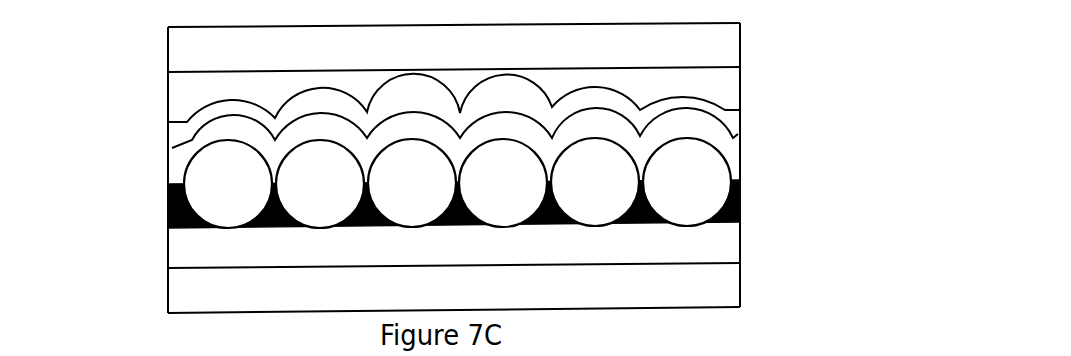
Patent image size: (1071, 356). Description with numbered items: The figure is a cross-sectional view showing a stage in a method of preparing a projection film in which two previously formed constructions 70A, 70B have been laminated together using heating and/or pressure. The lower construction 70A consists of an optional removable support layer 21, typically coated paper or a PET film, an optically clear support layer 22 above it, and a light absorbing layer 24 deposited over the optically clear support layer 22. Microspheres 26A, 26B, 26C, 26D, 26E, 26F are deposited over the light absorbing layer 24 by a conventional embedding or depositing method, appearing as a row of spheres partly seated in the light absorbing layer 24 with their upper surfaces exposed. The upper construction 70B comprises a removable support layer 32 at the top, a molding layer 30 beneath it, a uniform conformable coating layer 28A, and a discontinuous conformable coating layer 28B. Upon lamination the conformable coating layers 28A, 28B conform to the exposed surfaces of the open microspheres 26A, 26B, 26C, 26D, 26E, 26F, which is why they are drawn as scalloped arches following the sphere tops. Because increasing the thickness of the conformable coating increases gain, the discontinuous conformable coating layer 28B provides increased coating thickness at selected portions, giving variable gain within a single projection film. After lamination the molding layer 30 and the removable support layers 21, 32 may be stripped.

The removable support layer 21 is at (237, 290).
The optically clear support layer 22 is at (227, 247).
The light absorbing layer 24 is at (168, 214).
The microsphere 26A is at (228, 184).
The microsphere 26B is at (320, 184).
The microsphere 26C is at (412, 183).
The microsphere 26D is at (503, 183).
The microsphere 26E is at (595, 182).
The microsphere 26F is at (687, 182).
The uniform conformable coating layer 28A is at (168, 158).
The discontinuous conformable coating layer 28B is at (168, 133).
The molding layer 30 is at (200, 87).
The removable support layer 32 is at (190, 55).
The construction 70A is at (735, 178).
The construction 70B is at (732, 58).